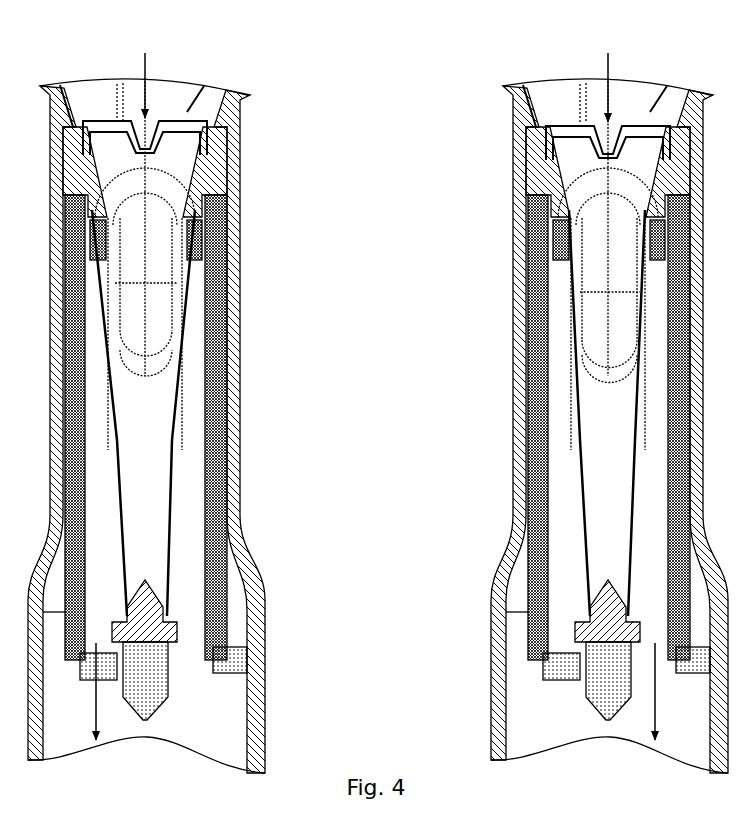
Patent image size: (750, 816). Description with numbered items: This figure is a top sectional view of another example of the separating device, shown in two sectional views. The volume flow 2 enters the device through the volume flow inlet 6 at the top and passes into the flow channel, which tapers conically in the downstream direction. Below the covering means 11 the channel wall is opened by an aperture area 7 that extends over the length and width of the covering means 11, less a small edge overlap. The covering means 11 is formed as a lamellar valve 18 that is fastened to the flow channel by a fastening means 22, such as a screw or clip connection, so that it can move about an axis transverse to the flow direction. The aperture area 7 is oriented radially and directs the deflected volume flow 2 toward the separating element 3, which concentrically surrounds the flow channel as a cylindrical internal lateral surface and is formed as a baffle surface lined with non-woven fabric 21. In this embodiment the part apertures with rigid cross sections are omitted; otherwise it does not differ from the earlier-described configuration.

The volume flow 2 is at (375, 400).
The separating element 3 is at (377, 427).
The volume flow inlet 6 is at (86, 114).
The aperture area 7 is at (587, 452).
The covering means 11 is at (368, 395).
The lamellar valve 18 is at (570, 272).
The non-woven fabric 21 is at (542, 492).
The fastening means 22 is at (602, 662).